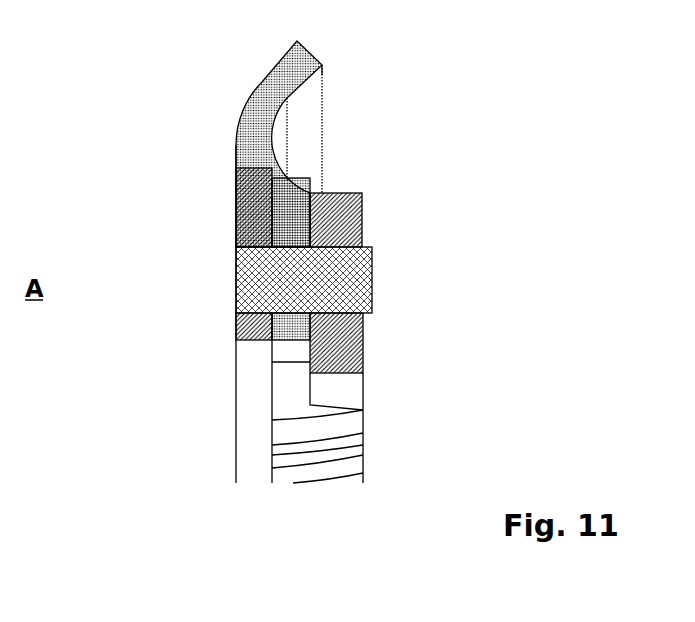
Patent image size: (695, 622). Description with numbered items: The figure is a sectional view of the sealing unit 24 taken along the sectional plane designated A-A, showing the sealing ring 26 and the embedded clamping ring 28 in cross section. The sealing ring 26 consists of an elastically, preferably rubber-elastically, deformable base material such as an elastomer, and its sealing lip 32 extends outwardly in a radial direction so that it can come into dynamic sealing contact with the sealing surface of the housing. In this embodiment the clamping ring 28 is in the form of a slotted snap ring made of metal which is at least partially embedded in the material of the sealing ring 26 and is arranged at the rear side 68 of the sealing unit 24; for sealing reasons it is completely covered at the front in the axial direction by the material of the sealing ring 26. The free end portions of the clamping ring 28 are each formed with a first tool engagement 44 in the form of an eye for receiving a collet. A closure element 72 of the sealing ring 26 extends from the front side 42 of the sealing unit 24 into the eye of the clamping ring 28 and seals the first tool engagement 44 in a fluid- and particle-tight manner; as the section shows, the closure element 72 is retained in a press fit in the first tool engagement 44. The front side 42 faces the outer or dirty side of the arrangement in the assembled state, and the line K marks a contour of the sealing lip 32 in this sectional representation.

The sealing unit 24 is at (480, 99).
The sealing ring 26 is at (284, 220).
The clamping ring 28 is at (345, 222).
The sealing lip 32 is at (278, 95).
The front side 42 is at (235, 187).
The first tool engagement 44 is at (350, 268).
The rear side 68 is at (368, 350).
The closure element 72 is at (304, 278).
The contour line K is at (324, 65).